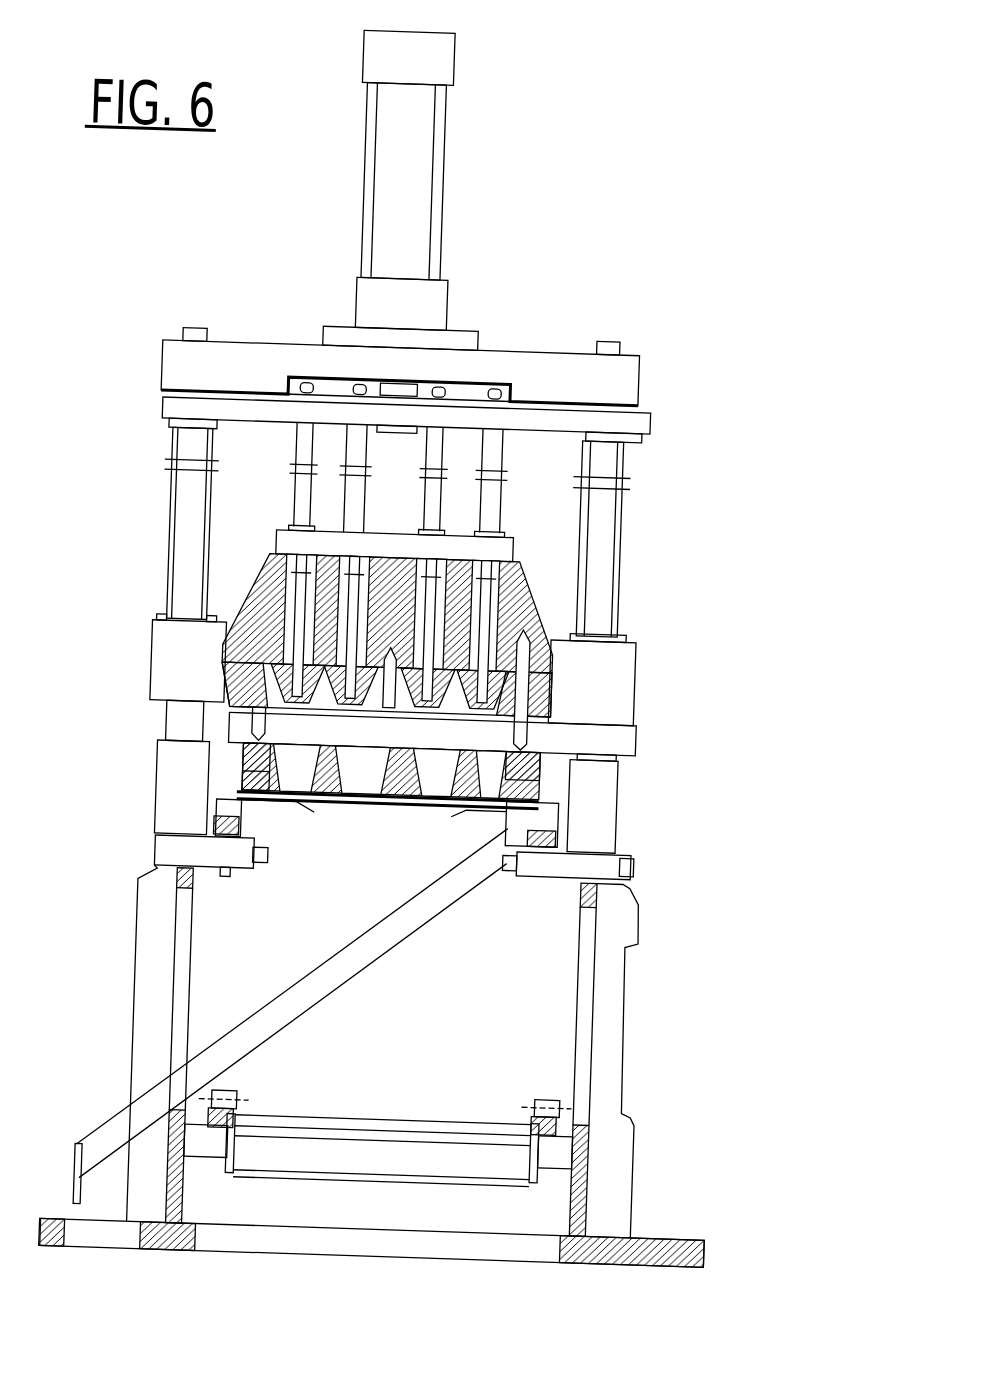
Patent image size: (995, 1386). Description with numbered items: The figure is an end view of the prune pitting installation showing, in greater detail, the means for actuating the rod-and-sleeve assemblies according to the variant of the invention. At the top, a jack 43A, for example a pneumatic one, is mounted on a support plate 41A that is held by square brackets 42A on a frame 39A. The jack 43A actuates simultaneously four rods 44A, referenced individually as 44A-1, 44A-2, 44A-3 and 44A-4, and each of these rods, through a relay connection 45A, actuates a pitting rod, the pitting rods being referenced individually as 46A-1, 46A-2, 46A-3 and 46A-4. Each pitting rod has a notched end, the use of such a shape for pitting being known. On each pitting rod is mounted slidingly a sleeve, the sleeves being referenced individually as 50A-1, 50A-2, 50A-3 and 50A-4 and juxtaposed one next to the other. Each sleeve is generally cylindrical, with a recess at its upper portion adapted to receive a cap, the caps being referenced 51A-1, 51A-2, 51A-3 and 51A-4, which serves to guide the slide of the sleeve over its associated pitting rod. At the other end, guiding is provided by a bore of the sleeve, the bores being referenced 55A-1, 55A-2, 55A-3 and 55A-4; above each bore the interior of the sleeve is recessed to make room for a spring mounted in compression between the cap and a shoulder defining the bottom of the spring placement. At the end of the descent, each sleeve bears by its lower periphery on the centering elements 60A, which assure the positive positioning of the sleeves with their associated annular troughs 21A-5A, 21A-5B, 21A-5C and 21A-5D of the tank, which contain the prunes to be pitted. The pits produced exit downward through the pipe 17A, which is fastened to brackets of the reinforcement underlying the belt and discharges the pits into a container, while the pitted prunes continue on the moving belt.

The jack 43A is at (400, 153).
The support plate 41A is at (536, 378).
The square brackets 42A is at (628, 412).
The frame 39A is at (607, 456).
The rod 44A-1 is at (288, 444).
The rods 44A is at (345, 445).
The rod 44A-2 is at (352, 627).
The rod 44A-3 is at (432, 446).
The rod 44A-4 is at (490, 454).
The relay connection 45A is at (392, 537).
The pitting rod 46A-1 is at (261, 580).
The pitting rod 46A-2 is at (282, 604).
The pitting rod 46A-3 is at (543, 589).
The pitting rod 46A-4 is at (548, 608).
The cap 51A-1 is at (285, 552).
The cap 51A-2 is at (325, 542).
The cap 51A-3 is at (495, 533).
The cap 51A-4 is at (551, 565).
The bore 55A-1 is at (238, 640).
The bore 55A-2 is at (239, 660).
The bore 55A-3 is at (549, 644).
The bore 55A-4 is at (552, 657).
The sleeve 50A-1 is at (235, 695).
The sleeve 50A-2 is at (251, 720).
The sleeve 50A-3 is at (432, 737).
The sleeve 50A-4 is at (551, 689).
The centering elements 60A is at (242, 775).
The annular trough 21A-5A is at (248, 800).
The annular trough 21A-5B is at (348, 782).
The annular trough 21A-5C is at (428, 779).
The annular trough 21A-5D is at (542, 774).
The pipe 17A is at (359, 962).